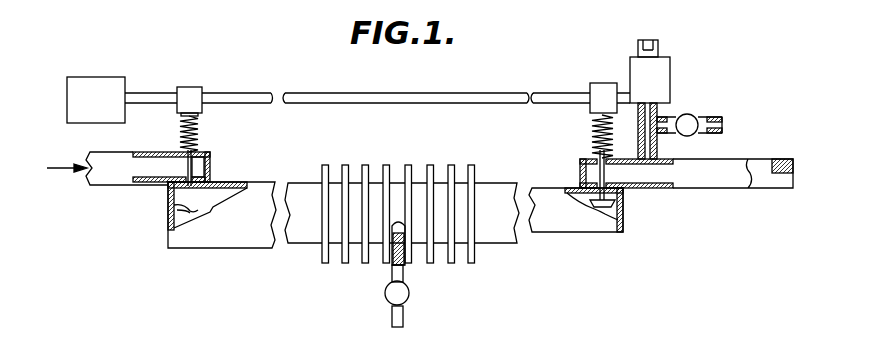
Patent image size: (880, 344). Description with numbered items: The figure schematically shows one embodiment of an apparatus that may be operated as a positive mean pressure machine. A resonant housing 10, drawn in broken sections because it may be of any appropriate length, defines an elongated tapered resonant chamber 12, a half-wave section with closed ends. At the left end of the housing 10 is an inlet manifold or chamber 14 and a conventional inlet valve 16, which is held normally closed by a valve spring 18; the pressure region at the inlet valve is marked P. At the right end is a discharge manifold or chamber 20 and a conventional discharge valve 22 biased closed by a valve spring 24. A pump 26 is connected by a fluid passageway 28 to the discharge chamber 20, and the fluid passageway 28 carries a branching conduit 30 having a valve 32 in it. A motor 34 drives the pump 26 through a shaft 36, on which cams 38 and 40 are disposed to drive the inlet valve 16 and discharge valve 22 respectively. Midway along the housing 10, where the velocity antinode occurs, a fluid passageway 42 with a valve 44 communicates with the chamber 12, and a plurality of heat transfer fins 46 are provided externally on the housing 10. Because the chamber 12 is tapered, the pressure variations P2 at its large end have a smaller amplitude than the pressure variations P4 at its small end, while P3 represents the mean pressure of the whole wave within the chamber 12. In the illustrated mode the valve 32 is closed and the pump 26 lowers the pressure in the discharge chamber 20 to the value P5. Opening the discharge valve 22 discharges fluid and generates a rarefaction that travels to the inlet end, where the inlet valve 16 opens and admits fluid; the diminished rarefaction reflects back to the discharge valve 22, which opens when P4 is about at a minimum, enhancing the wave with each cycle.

The resonant housing 10 is at (233, 233).
The resonant chamber 12 is at (172, 205).
The inlet manifold 14 is at (115, 173).
The inlet valve 16 is at (204, 173).
The valve spring 18 is at (198, 130).
The discharge manifold 20 is at (660, 177).
The discharge valve 22 is at (600, 173).
The valve spring 24 is at (592, 138).
The pump 26 is at (660, 83).
The fluid passageway 28 is at (650, 145).
The branching conduit 30 is at (707, 130).
The valve 32 is at (690, 118).
The motor 34 is at (108, 112).
The shaft 36 is at (355, 101).
The cam 38 is at (190, 96).
The cam 40 is at (592, 85).
The fluid passageway 42 is at (403, 273).
The valve 44 is at (385, 297).
The heat transfer fins 46 is at (347, 262).
The pressure region P is at (165, 167).
The pressure variations at large end P2 is at (177, 210).
The mean pressure P3 is at (397, 220).
The pressure variations at small end P4 is at (617, 230).
The discharge chamber pressure P5 is at (638, 177).